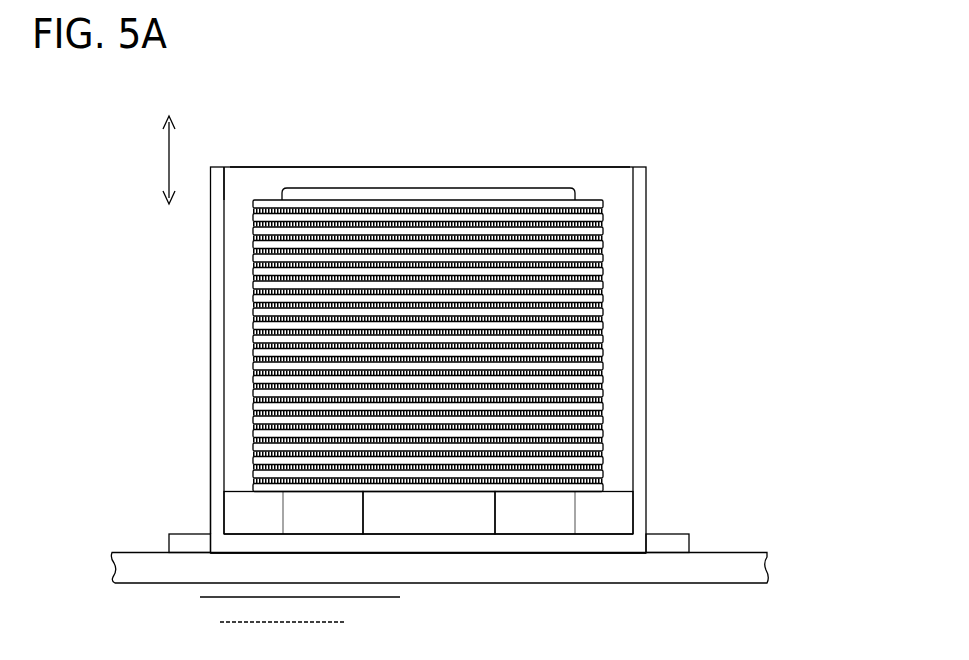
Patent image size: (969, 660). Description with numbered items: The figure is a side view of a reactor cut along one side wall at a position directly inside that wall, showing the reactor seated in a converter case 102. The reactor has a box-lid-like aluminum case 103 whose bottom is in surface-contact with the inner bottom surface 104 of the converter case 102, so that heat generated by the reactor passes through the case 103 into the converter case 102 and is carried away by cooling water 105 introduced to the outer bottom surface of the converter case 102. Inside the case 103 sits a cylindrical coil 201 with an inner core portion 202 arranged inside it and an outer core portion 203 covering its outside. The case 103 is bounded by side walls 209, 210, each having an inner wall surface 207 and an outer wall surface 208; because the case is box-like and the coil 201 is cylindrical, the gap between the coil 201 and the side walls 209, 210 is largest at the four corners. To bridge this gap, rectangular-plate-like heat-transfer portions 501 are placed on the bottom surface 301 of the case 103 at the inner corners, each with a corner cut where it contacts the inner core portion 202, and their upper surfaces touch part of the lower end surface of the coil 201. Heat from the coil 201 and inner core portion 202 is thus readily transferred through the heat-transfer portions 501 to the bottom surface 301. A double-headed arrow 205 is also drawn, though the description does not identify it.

The converter case 102 is at (132, 557).
The case 103 is at (651, 334).
The inner bottom surface 104 is at (723, 552).
The cooling water 105 is at (542, 638).
The coil 201 is at (545, 207).
The inner core portion 202 is at (425, 188).
The outer core portion 203 is at (527, 177).
The vertical direction 205 is at (167, 162).
The inner wall surface 207 is at (223, 181).
The outer wall surface 208 is at (208, 247).
The side wall 209 is at (217, 392).
The side wall 210 is at (642, 398).
The bottom surface 301 is at (595, 542).
The heat-transfer portion 501 is at (249, 506).